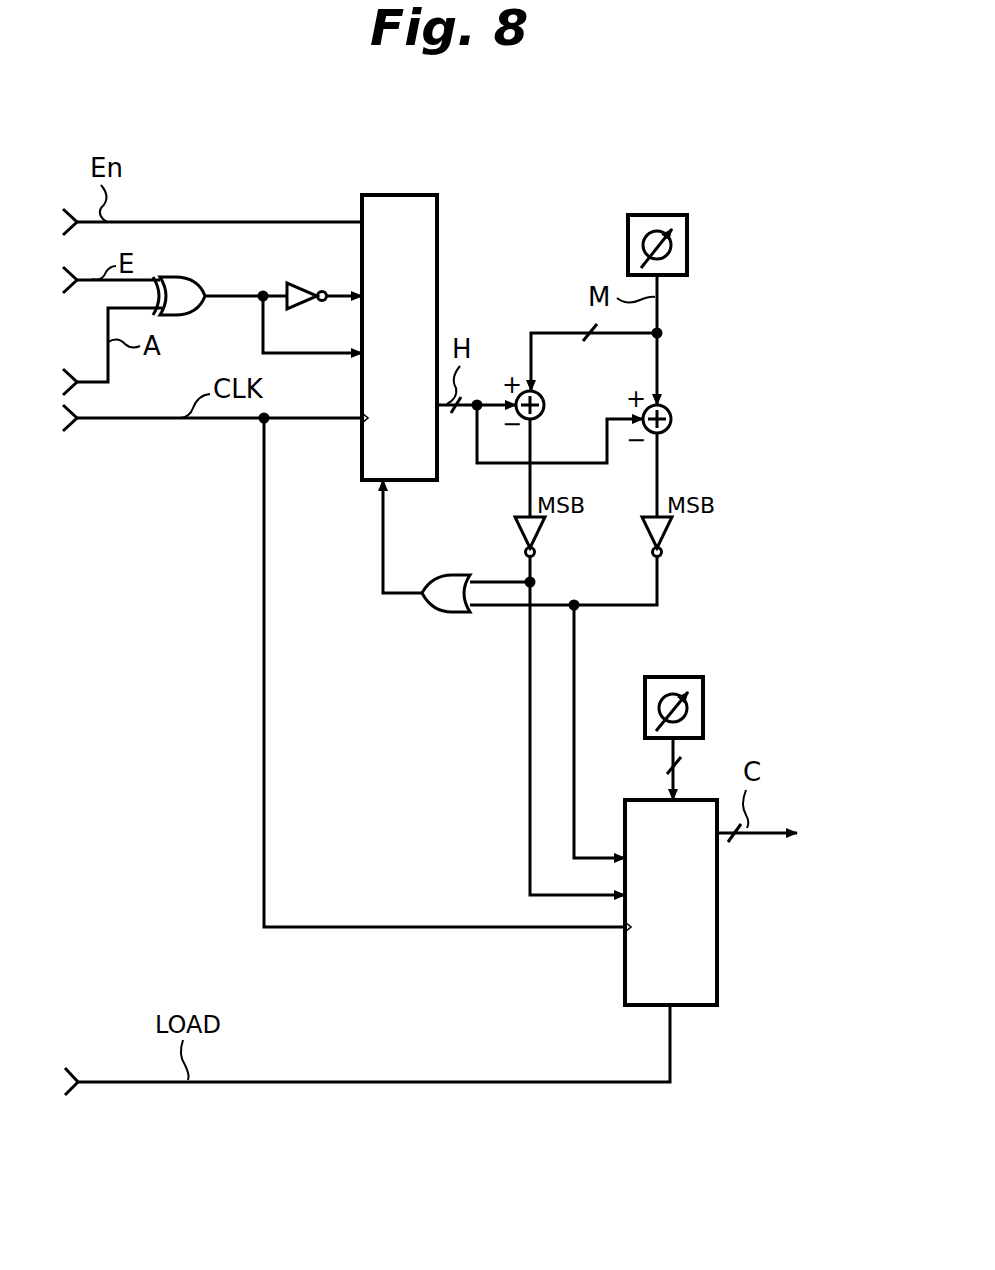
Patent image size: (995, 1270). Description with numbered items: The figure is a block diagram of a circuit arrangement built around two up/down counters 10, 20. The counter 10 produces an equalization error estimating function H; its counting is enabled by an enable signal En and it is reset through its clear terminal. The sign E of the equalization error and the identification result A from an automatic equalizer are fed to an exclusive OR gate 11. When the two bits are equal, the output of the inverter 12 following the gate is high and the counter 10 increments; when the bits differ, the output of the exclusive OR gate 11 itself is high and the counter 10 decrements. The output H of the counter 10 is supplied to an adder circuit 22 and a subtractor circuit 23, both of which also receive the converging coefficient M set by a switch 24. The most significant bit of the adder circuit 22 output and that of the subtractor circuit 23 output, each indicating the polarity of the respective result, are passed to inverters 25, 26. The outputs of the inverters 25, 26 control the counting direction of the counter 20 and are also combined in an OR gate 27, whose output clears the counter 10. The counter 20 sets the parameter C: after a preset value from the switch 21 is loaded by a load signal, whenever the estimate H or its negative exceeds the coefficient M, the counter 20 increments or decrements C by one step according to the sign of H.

The up/down counter 10 is at (437, 248).
The exclusive OR gate 11 is at (190, 278).
The inverter 12 is at (318, 260).
The up/down counter 20 is at (625, 812).
The switch 21 is at (645, 690).
The adder circuit 22 is at (672, 414).
The subtractor circuit 23 is at (545, 403).
The switch 24 is at (627, 238).
The inverter 25 is at (672, 540).
The inverter 26 is at (545, 540).
The OR gate 27 is at (450, 613).